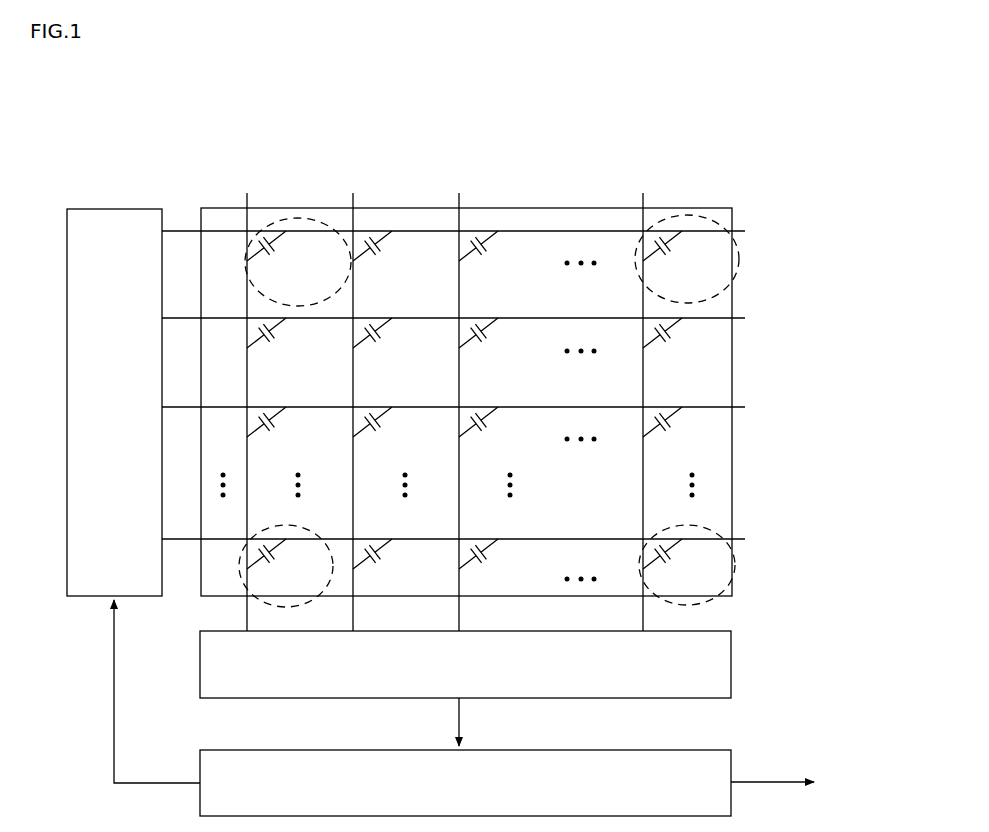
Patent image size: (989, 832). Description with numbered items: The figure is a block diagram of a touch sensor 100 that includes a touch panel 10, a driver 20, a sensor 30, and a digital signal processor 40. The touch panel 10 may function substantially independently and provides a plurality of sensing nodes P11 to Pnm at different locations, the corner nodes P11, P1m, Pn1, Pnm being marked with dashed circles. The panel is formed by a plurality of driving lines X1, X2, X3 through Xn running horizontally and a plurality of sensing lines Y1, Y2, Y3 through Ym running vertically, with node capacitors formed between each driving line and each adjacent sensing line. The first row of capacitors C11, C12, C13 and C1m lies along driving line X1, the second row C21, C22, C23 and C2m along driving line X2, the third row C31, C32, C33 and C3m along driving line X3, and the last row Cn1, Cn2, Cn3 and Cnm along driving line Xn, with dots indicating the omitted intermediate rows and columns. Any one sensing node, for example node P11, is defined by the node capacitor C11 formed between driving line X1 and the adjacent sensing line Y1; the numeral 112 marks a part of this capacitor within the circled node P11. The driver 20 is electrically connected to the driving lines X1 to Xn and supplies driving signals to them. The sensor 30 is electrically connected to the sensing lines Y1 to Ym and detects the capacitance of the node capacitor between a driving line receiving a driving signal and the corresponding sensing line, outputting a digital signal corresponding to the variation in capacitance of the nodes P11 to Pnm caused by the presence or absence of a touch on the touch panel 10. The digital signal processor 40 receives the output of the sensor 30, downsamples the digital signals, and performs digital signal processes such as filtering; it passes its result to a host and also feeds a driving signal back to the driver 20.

The touch sensor 100 is at (655, 112).
The touch panel 10 is at (690, 208).
The driver 20 is at (115, 206).
The sensor 30 is at (732, 662).
The digital signal processor 40 is at (732, 755).
The sensing electrode of capacitor 112 is at (268, 263).
The sensing node P11 is at (288, 222).
The sensing node P1m is at (738, 268).
The sensing node Pn1 is at (243, 552).
The sensing node Pnm is at (733, 578).
The node capacitor C11 is at (282, 267).
The node capacitor C12 is at (388, 249).
The node capacitor C13 is at (494, 249).
The node capacitor C1m is at (681, 249).
The node capacitor C21 is at (282, 336).
The node capacitor C22 is at (388, 336).
The node capacitor C23 is at (494, 336).
The node capacitor C2m is at (681, 336).
The node capacitor C31 is at (282, 425).
The node capacitor C32 is at (388, 425).
The node capacitor C33 is at (494, 425).
The node capacitor C3m is at (681, 425).
The node capacitor Cn1 is at (282, 557).
The node capacitor Cn2 is at (388, 557).
The node capacitor Cn3 is at (494, 557).
The node capacitor Cnm is at (681, 557).
The driving line X1 is at (472, 233).
The driving line X2 is at (472, 320).
The driving line X3 is at (472, 409).
The driving line Xn is at (472, 541).
The sensing line Y1 is at (247, 401).
The sensing line Y2 is at (352, 401).
The sensing line Y3 is at (458, 401).
The sensing line Ym is at (643, 401).